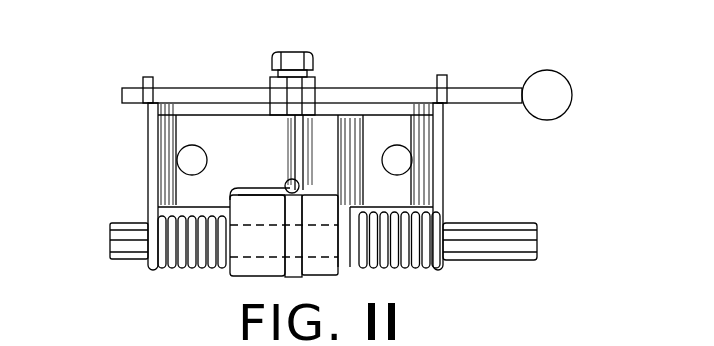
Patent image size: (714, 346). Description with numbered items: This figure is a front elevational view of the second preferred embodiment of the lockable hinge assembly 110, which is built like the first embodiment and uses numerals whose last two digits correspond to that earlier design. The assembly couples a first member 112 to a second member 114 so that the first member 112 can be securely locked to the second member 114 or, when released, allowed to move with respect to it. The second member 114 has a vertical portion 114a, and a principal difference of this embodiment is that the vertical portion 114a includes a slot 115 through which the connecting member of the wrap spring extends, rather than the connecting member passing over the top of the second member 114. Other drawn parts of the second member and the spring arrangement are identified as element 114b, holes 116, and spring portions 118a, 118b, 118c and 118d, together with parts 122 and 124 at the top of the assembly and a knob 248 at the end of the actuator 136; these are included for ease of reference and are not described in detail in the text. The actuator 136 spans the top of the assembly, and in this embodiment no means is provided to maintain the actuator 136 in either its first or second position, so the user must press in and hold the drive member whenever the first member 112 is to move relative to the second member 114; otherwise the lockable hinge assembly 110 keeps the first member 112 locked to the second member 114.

The lockable hinge assembly 110 is at (410, 51).
The first member 112 is at (478, 243).
The second member 114 is at (277, 172).
The vertical portion 114a is at (255, 262).
The housing inner plate 114b is at (416, 128).
The slot 115 is at (293, 268).
The holes 116 is at (193, 160).
The left spring 118a is at (193, 266).
The right spring 118b is at (410, 265).
The left side wall 118c is at (148, 140).
The right side wall 118d is at (444, 140).
The washer nut 122 is at (310, 74).
The bolt head 124 is at (297, 52).
The actuator 136 is at (201, 88).
The knob 248 is at (566, 77).